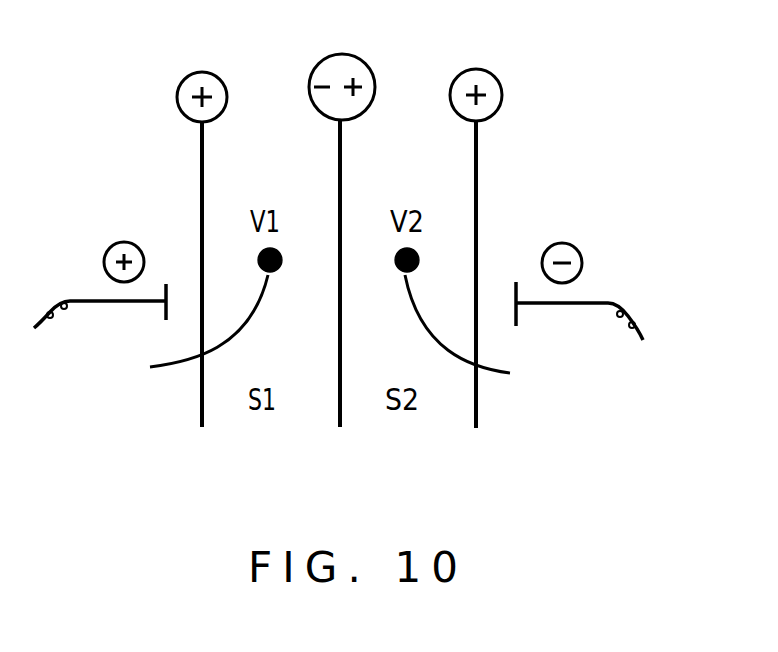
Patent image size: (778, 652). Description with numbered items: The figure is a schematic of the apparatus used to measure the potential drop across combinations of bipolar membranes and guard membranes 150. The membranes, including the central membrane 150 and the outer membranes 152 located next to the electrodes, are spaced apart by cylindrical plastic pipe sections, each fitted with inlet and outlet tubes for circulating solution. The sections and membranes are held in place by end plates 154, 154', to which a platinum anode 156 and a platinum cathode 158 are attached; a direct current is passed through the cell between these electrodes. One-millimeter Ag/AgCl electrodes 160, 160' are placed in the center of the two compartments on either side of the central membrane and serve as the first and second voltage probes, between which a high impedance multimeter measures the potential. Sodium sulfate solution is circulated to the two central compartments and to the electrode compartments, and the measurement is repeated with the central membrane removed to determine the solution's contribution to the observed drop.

The bipolar membrane and guard membranes 150 is at (378, 56).
The voltage source 152 is at (188, 73).
The end plate 154 is at (109, 267).
The end plate 154' is at (572, 273).
The platinum anode 156 is at (104, 256).
The platinum cathode 158 is at (584, 257).
The Ag/AgCl electrode 160 is at (185, 332).
The Ag/AgCl electrode 160' is at (486, 333).